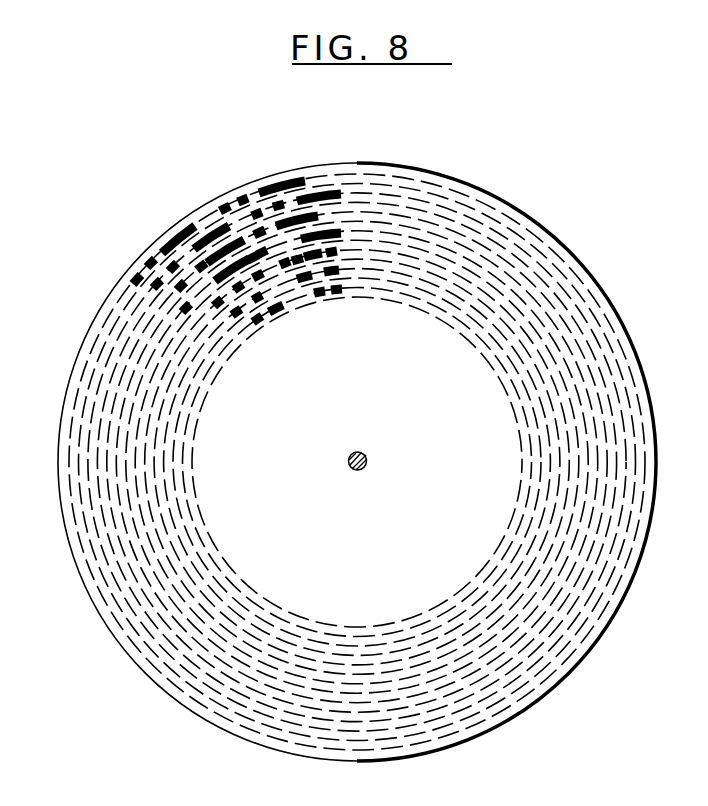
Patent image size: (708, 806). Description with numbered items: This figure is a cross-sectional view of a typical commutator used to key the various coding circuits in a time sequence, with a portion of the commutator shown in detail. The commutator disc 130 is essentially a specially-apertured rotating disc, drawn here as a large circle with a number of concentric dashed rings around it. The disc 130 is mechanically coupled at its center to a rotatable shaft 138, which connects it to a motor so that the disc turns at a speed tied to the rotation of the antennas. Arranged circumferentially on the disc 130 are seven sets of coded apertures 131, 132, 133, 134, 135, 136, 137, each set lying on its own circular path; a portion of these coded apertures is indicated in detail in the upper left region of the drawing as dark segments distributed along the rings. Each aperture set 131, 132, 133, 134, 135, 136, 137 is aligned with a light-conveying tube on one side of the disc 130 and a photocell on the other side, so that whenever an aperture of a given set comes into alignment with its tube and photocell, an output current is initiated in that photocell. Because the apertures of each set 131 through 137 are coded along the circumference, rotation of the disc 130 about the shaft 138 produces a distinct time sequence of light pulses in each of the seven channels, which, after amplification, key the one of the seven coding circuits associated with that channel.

The commutator disc 130 is at (587, 270).
The first set of coded apertures 131 is at (136, 285).
The second set of coded apertures 132 is at (186, 309).
The third set of coded apertures 133 is at (218, 321).
The fourth set of coded apertures 134 is at (237, 327).
The fifth set of coded apertures 135 is at (250, 329).
The sixth set of coded apertures 136 is at (260, 331).
The seventh set of coded apertures 137 is at (268, 333).
The rotatable shaft 138 is at (367, 455).